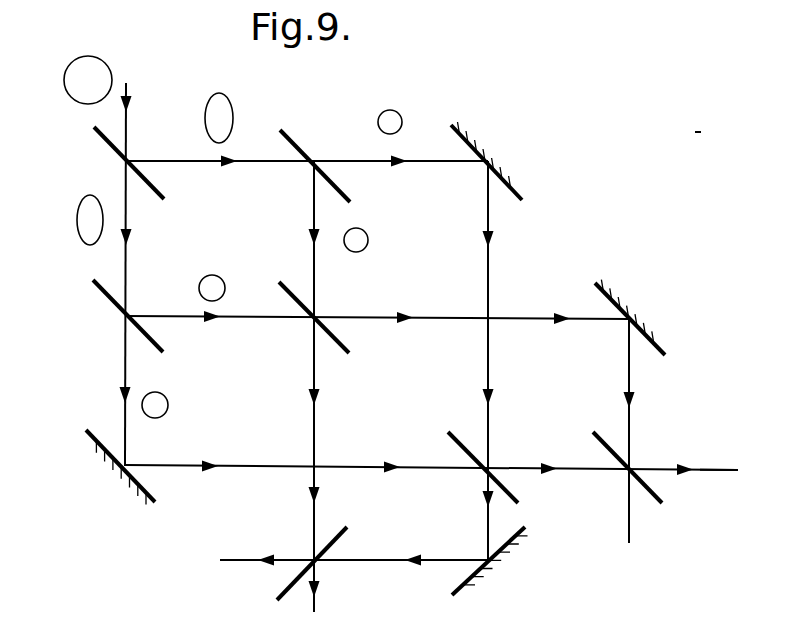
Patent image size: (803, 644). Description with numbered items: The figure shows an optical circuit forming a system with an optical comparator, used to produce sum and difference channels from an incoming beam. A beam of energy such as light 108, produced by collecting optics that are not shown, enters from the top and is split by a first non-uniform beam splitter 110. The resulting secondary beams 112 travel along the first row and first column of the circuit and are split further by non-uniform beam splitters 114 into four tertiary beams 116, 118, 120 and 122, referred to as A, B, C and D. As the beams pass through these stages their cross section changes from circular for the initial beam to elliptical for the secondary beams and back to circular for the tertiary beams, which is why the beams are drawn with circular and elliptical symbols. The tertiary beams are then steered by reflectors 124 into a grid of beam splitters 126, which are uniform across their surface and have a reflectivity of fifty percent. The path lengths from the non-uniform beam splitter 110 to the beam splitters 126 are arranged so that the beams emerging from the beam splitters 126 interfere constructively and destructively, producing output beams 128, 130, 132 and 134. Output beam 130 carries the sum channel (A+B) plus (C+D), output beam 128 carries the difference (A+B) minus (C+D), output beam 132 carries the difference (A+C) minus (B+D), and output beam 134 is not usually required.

The beam of energy 108 is at (127, 83).
The first non-uniform beam splitter 110 is at (112, 152).
The secondary beams 112 is at (258, 160).
The non-uniform beam splitters 114 is at (307, 150).
The tertiary beam 116 is at (125, 440).
The tertiary beam 118 is at (172, 315).
The tertiary beam 120 is at (315, 278).
The tertiary beam 122 is at (427, 160).
The reflectors 124 is at (541, 172).
The beam splitters 126 is at (345, 348).
The output beam 128 is at (230, 560).
The output beam 130 is at (315, 610).
The output beam 132 is at (629, 537).
The output beam 134 is at (703, 468).